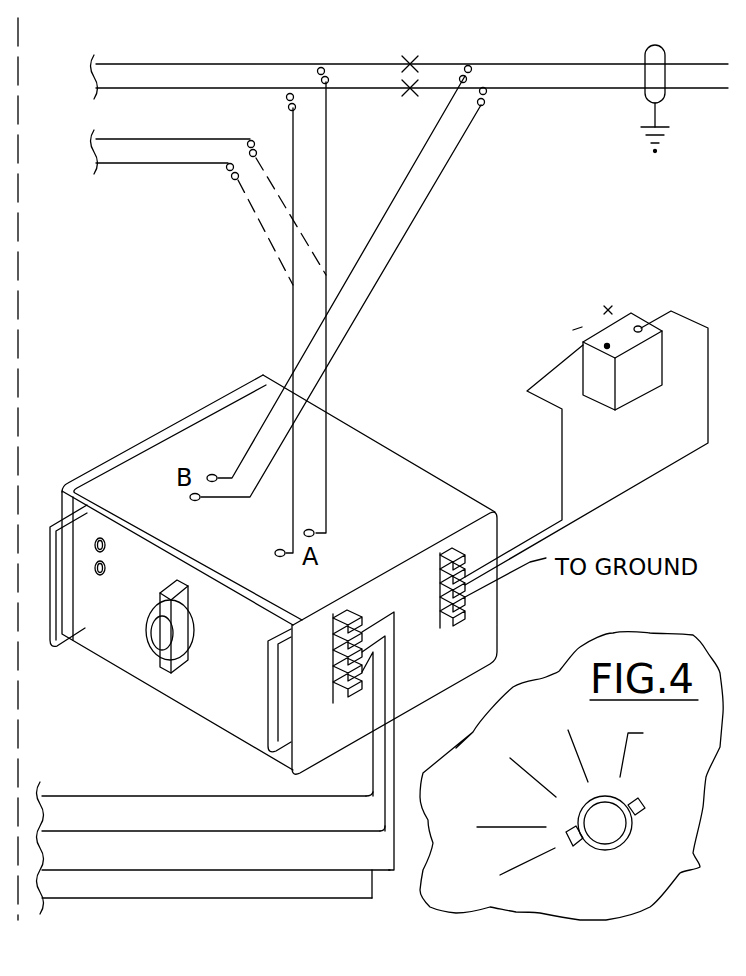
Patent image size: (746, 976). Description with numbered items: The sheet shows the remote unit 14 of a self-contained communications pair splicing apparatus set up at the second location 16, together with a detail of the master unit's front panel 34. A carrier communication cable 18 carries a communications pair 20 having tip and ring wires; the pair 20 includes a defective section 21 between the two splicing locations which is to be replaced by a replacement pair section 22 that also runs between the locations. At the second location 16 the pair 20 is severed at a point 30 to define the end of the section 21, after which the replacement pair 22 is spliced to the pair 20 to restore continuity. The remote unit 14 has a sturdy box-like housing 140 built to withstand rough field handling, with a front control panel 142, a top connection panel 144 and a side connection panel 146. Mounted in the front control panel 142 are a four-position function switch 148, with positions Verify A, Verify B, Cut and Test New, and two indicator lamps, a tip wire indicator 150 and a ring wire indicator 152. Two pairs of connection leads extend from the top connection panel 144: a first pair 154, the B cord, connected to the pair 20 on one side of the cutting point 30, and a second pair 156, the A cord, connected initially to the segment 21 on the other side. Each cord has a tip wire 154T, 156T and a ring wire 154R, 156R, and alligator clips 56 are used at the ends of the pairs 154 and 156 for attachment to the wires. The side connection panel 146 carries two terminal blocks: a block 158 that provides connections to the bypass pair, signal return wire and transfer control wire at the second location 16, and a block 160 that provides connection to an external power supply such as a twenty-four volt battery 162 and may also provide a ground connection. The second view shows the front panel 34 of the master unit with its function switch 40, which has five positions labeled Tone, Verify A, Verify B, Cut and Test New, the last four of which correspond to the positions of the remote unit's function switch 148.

In FIG. 1, the remote unit 14 is at (368, 423).
In FIG. 1, the second location 16 is at (114, 253).
In FIG. 1, the carrier communication cable 18 is at (650, 46).
In FIG. 1, the communications pair 20 is at (530, 88).
In FIG. 1, the section 21 is at (140, 88).
In FIG. 1, the replacement pair section 22 is at (145, 163).
In FIG. 1, the point 30 is at (405, 92).
In FIG. 1, the alligator clips 56 is at (320, 68).
In FIG. 1, the housing 140 is at (300, 574).
In FIG. 1, the front control panel 142 is at (262, 710).
In FIG. 1, the top connection panel 144 is at (411, 527).
In FIG. 1, the side connection panel 146 is at (423, 600).
In FIG. 1, the function switch 148 is at (140, 673).
In FIG. 1, the tip wire indicator 150 is at (125, 592).
In FIG. 1, the ring wire indicator 152 is at (108, 544).
In FIG. 1, the first pair 154 is at (364, 306).
In FIG. 1, the ring wire 154R is at (445, 107).
In FIG. 1, the tip wire 154T is at (436, 182).
In FIG. 1, the second pair 156 is at (288, 306).
In FIG. 1, the ring wire 156R is at (326, 185).
In FIG. 1, the tip wire 156T is at (293, 135).
In FIG. 1, the block 158 is at (335, 703).
In FIG. 1, the block 160 is at (465, 620).
In FIG. 1, the battery 162 is at (647, 398).
In FIG. 4, the front panel 34 is at (590, 903).
In FIG. 4, the function switch 40 is at (633, 828).